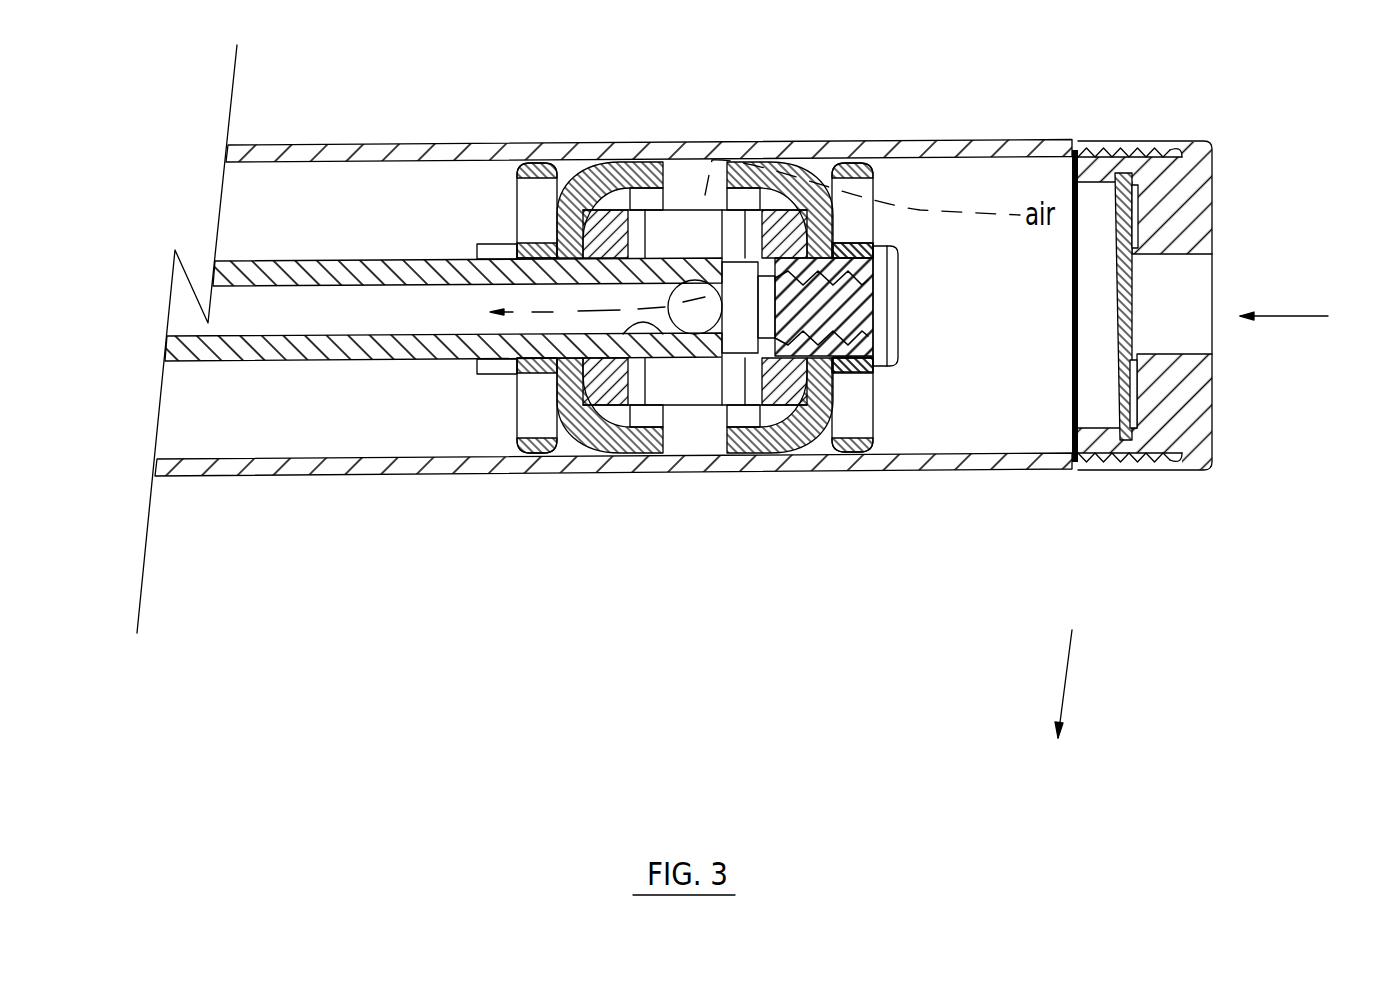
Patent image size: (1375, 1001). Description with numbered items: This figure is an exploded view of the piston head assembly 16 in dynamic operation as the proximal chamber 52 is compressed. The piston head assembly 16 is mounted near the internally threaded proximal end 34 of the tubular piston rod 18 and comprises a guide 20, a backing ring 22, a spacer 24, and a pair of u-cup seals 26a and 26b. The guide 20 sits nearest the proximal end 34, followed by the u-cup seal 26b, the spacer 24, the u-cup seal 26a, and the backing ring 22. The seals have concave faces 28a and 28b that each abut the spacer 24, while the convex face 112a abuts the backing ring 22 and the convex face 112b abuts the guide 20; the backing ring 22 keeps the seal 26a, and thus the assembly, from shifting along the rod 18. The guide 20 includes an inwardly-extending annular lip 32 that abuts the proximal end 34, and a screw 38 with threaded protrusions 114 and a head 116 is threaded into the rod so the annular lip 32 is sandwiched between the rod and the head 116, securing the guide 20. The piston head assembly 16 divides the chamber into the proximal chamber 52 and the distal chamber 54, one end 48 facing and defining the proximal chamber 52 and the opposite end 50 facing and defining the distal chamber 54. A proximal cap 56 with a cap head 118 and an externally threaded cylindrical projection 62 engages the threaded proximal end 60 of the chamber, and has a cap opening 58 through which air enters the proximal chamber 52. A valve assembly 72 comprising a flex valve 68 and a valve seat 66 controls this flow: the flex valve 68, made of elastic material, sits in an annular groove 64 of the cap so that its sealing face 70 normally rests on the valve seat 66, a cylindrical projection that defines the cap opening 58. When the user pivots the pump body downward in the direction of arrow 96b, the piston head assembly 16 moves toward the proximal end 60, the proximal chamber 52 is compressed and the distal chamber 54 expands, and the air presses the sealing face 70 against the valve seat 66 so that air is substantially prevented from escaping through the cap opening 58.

The piston head assembly 16 is at (613, 357).
The tubular piston rod 18 is at (413, 218).
The guide 20 is at (891, 375).
The backing ring 22 is at (475, 264).
The spacer 24 is at (695, 218).
The u-cup seal 26a is at (571, 146).
The u-cup seal 26b is at (826, 149).
The concave face 28a is at (677, 380).
The concave face 28b is at (715, 375).
The annular lip 32 is at (880, 257).
The proximal end 34 is at (844, 463).
The screw 38 is at (879, 306).
The end 48 is at (1030, 510).
The opposite end 50 is at (404, 449).
The proximal chamber 52 is at (990, 106).
The distal chamber 54 is at (318, 115).
The proximal cap 56 is at (1211, 300).
The cap opening 58 is at (1302, 319).
The proximal end 60 is at (1123, 81).
The cylindrical projection 62 is at (1067, 306).
The annular groove 64 is at (1191, 244).
The valve seat 66 is at (1254, 274).
The flex valve 68 is at (1233, 363).
The sealing face 70 is at (1081, 306).
The valve assembly 72 is at (1136, 535).
The arrow 96b is at (1088, 695).
The convex face 112a is at (536, 558).
The convex face 112b is at (767, 548).
The threaded protrusions 114 is at (862, 329).
The head 116 is at (916, 323).
The cap head 118 is at (1282, 229).